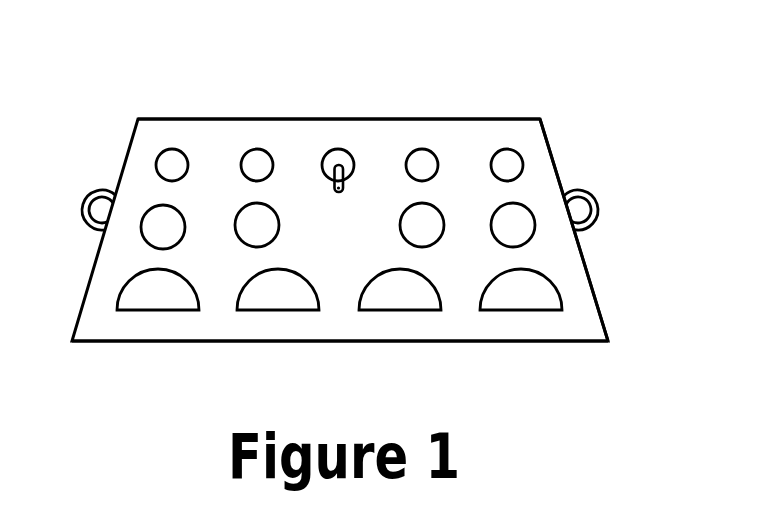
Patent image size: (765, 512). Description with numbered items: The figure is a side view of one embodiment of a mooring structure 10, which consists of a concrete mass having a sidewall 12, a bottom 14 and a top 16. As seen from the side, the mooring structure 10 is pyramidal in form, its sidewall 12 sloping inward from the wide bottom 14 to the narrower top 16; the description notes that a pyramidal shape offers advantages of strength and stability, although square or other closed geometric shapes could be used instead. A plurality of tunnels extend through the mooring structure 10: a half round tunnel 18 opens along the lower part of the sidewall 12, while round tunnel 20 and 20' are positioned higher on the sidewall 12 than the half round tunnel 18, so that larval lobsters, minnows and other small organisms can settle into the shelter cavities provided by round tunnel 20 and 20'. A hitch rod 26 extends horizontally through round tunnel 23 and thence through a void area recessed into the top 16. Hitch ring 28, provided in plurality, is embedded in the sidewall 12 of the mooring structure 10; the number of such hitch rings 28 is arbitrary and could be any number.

The mooring structure 10 is at (116, 111).
The sidewall 12 is at (592, 287).
The bottom 14 is at (418, 342).
The top 16 is at (420, 119).
The half round tunnel 18 is at (152, 311).
The round tunnel 20 is at (289, 234).
The round tunnel 20' is at (360, 133).
The round tunnel 23 is at (339, 149).
The hitch rod 26 is at (338, 193).
The hitch ring 28 is at (101, 190).